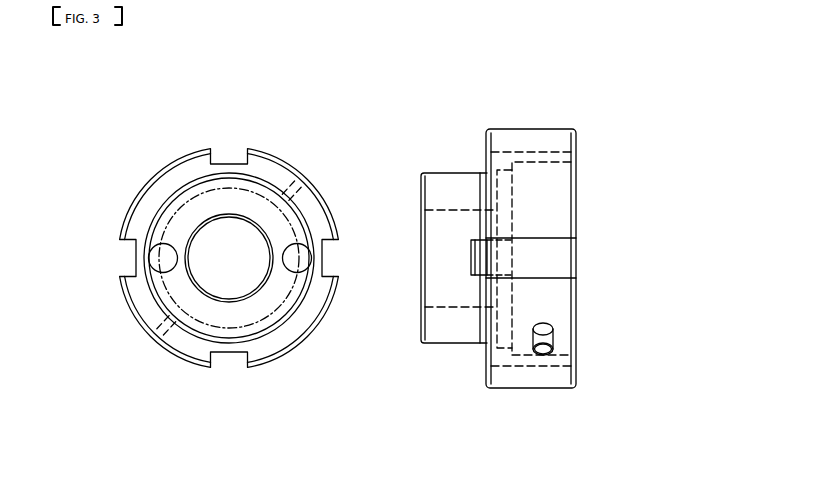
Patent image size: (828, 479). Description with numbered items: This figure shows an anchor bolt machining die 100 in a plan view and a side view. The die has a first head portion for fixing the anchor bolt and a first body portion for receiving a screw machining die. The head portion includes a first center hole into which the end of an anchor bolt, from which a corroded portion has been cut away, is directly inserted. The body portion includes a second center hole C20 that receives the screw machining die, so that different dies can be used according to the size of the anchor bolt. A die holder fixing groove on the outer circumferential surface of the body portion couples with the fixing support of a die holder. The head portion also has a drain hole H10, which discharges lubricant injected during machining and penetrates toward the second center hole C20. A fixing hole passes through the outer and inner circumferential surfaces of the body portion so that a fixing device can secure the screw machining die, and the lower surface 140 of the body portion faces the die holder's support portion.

The anchor bolt machining die 100 is at (80, 124).
The lower surface 140 is at (578, 158).
The drain hole H10 is at (300, 257).
The second center hole C20 is at (561, 208).